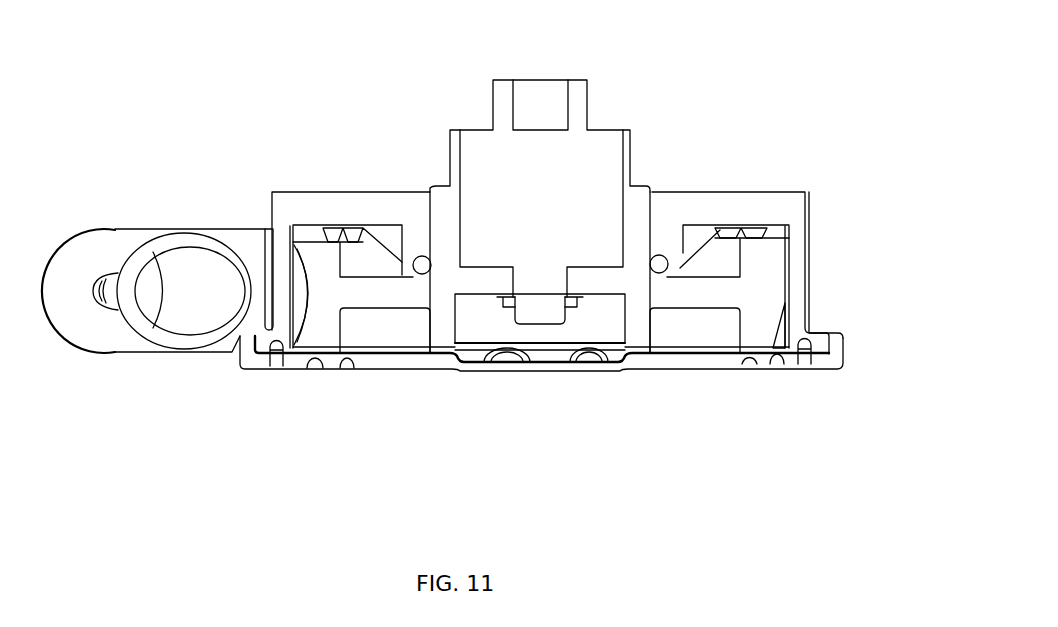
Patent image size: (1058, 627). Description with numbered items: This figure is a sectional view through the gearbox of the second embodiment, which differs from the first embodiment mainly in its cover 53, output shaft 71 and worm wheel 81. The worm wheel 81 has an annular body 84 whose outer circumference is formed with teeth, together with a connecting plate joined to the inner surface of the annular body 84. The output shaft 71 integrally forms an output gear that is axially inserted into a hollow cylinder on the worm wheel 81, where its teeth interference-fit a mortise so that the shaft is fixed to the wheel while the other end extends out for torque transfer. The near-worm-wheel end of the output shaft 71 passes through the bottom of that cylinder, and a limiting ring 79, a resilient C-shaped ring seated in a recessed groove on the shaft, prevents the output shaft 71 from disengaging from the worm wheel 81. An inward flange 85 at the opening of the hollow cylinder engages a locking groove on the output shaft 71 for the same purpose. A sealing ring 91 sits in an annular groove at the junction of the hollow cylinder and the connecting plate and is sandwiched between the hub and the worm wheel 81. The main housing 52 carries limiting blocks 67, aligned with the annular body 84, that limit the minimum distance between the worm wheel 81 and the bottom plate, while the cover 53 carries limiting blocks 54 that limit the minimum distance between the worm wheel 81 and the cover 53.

The main housing 52 is at (307, 207).
The sealing ring 91 is at (418, 257).
The output shaft 71 is at (477, 155).
The worm wheel 81 is at (635, 207).
The limiting blocks 67 is at (755, 237).
The annular body 84 is at (767, 280).
The cover 53 is at (335, 352).
The inward flange 85 is at (445, 328).
The limiting ring 79 is at (578, 297).
The limiting blocks 54 is at (697, 358).